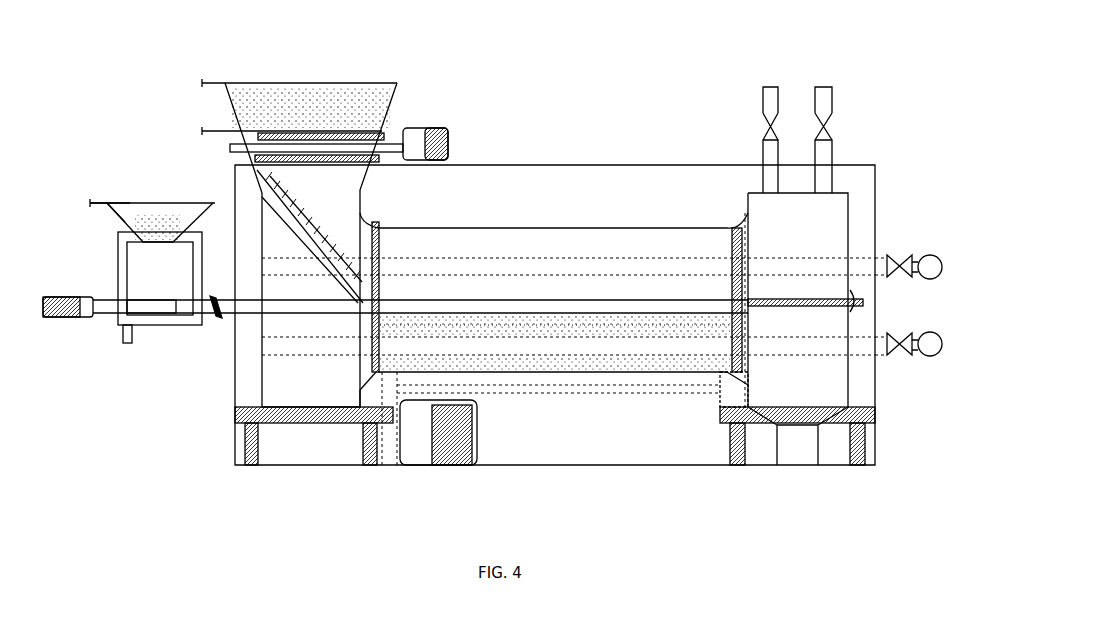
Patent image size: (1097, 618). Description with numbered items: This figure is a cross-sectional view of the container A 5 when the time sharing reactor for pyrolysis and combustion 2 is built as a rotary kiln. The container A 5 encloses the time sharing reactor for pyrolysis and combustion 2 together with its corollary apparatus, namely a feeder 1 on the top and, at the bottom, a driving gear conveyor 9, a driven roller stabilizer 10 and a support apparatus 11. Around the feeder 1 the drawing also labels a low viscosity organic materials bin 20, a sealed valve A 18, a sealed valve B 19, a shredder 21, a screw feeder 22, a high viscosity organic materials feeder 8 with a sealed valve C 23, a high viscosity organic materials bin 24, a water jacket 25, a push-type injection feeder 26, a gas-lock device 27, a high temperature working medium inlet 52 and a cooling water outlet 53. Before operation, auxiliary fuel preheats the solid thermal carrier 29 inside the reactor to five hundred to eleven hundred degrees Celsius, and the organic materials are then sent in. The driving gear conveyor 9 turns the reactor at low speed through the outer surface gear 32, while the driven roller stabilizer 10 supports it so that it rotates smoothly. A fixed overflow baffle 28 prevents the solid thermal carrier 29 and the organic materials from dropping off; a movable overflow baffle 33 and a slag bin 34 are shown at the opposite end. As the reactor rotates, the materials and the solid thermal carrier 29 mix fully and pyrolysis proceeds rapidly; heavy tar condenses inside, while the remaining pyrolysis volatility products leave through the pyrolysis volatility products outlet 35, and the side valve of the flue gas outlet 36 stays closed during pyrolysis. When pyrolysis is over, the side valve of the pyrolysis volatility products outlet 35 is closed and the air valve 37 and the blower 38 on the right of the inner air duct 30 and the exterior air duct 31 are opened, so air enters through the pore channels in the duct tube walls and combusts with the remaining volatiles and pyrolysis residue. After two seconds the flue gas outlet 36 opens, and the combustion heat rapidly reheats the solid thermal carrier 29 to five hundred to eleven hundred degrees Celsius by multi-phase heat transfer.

The feeder 1 is at (152, 200).
The time sharing reactor for pyrolysis and combustion 2 is at (290, 100).
The container A 5 is at (520, 178).
The high viscosity organic materials feeder 8 is at (163, 210).
The driving gear conveyor 9 is at (395, 430).
The driven roller stabilizer 10 is at (720, 395).
The support apparatus 11 is at (295, 425).
The sealed valve A 18 is at (225, 83).
The sealed valve B 19 is at (202, 131).
The low viscosity organic materials bin 20 is at (385, 120).
The shredder 21 is at (395, 145).
The screw feeder 22 is at (262, 190).
The sealed valve C 23 is at (90, 203).
The high viscosity organic materials bin 24 is at (118, 235).
The water jacket 25 is at (143, 283).
The push-type injection feeder 26 is at (120, 322).
The gas-lock device 27 is at (212, 296).
The fixed overflow baffle 28 is at (358, 395).
The solid thermal carrier 29 is at (587, 363).
The inner air duct 30 is at (645, 347).
The exterior air duct 31 is at (600, 262).
The outer surface gear 32 is at (380, 225).
The movable overflow baffle 33 is at (728, 228).
The slag bin 34 is at (800, 435).
The pyrolysis volatility products outlet 35 is at (770, 87).
The flue gas outlet 36 is at (822, 87).
The air valve 37 is at (902, 255).
The blower 38 is at (934, 256).
The high temperature working medium inlet 52 is at (107, 230).
The cooling water outlet 53 is at (128, 343).